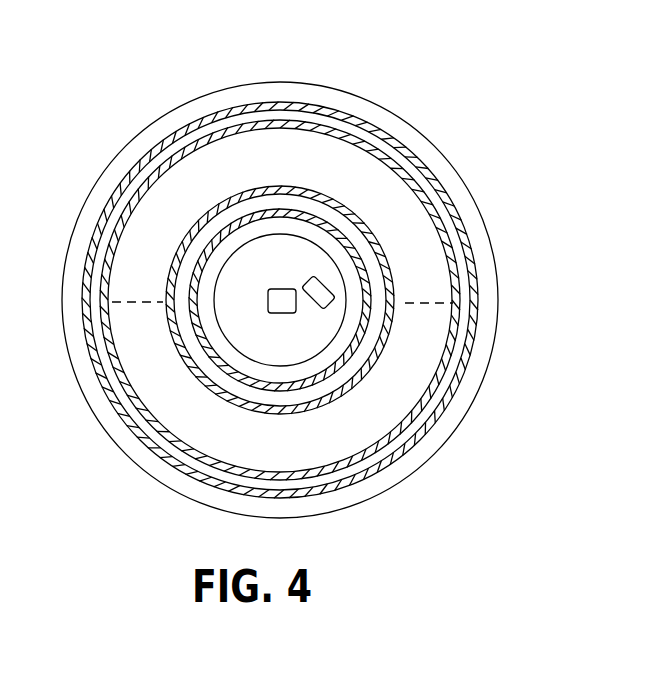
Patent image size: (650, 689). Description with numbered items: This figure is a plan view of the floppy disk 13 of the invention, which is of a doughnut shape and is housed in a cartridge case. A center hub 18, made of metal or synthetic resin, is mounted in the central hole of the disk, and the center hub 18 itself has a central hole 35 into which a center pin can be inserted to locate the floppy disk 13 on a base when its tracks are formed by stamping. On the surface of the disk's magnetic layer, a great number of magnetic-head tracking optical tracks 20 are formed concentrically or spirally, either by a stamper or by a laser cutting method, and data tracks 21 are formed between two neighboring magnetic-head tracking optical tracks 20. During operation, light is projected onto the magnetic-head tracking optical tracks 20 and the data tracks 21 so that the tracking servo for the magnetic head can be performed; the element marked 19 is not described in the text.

The floppy disk 13 is at (122, 117).
The center hub 18 is at (293, 250).
The inner seal ring 19 is at (357, 247).
The magnetic-head tracking optical tracks 20 is at (395, 272).
The data tracks 21 is at (462, 396).
The central hole 35 is at (268, 289).